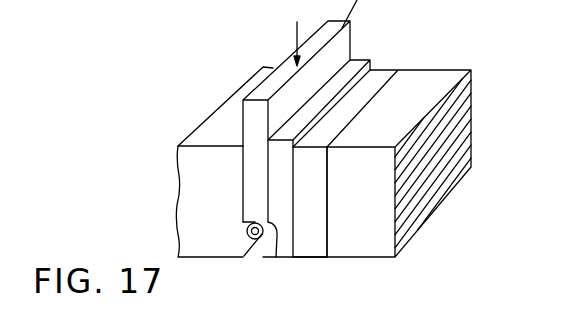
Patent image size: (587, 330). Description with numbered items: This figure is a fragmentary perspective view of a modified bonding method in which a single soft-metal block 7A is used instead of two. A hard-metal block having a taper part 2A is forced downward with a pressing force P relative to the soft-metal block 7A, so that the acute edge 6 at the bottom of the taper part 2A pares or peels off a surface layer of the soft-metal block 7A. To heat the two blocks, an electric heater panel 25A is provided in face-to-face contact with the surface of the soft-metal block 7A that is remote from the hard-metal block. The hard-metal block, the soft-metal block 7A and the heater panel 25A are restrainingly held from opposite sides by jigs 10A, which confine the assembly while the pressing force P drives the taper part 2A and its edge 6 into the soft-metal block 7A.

The jigs 10A is at (215, 128).
The taper part 2A is at (352, 44).
The soft-metal block 7A is at (360, 66).
The electric heater panel 25A is at (313, 243).
The edge 6 is at (276, 257).
The pressing force P is at (295, 33).